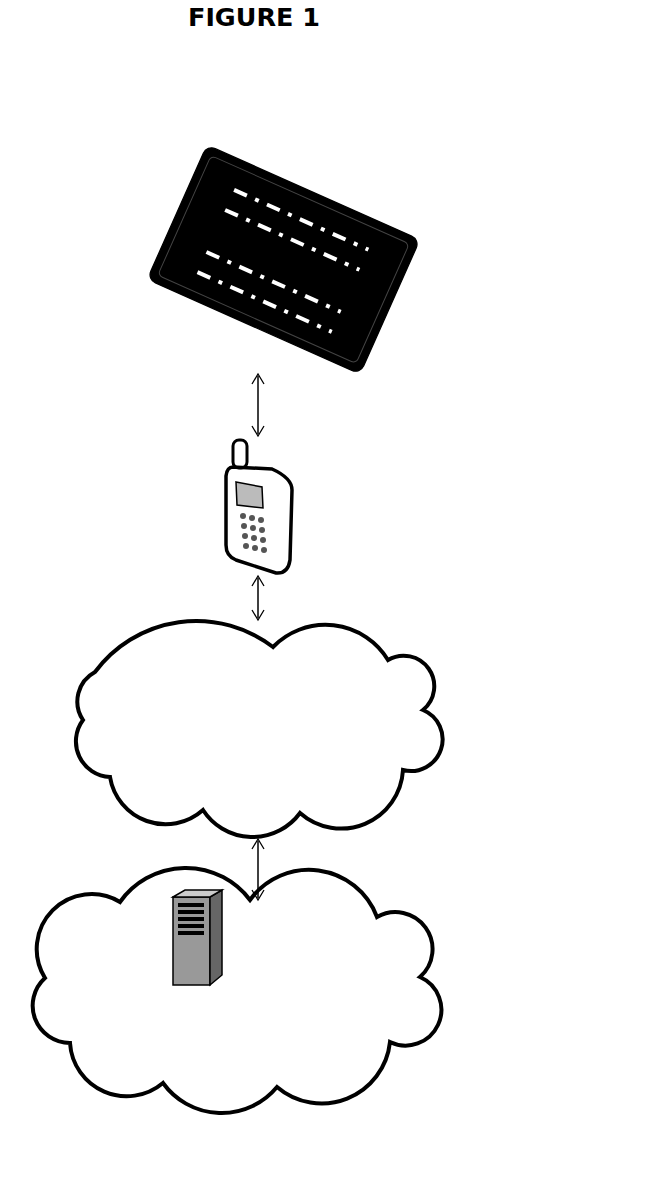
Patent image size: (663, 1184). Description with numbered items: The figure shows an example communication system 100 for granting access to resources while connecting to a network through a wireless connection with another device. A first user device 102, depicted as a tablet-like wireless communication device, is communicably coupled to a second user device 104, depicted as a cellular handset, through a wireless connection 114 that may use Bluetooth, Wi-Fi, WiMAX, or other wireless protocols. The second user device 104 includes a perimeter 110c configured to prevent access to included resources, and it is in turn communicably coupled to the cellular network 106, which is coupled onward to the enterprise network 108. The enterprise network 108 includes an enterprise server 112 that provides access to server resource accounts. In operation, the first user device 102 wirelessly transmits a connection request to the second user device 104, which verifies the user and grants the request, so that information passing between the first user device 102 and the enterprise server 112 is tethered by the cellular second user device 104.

The system 100 is at (551, 179).
The first user device 102 is at (283, 259).
The second user device 104 is at (258, 506).
The cellular network 106 is at (259, 729).
The enterprise network 108 is at (237, 990).
The perimeter 110c is at (224, 493).
The enterprise server 112 is at (170, 937).
The wireless connection 114 is at (226, 403).